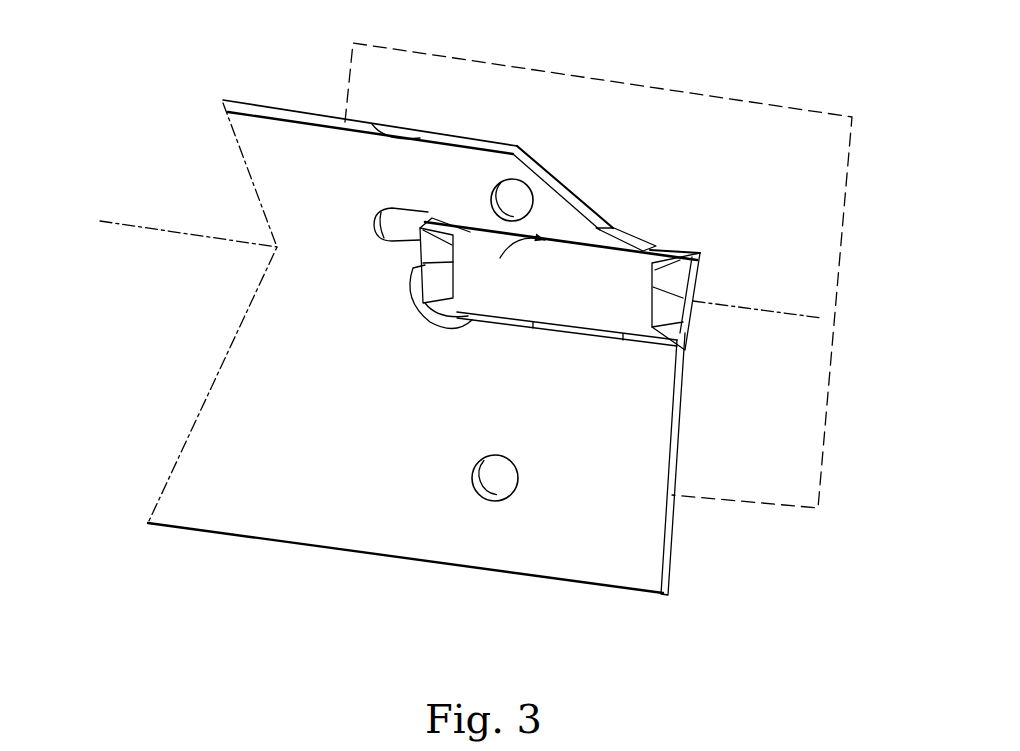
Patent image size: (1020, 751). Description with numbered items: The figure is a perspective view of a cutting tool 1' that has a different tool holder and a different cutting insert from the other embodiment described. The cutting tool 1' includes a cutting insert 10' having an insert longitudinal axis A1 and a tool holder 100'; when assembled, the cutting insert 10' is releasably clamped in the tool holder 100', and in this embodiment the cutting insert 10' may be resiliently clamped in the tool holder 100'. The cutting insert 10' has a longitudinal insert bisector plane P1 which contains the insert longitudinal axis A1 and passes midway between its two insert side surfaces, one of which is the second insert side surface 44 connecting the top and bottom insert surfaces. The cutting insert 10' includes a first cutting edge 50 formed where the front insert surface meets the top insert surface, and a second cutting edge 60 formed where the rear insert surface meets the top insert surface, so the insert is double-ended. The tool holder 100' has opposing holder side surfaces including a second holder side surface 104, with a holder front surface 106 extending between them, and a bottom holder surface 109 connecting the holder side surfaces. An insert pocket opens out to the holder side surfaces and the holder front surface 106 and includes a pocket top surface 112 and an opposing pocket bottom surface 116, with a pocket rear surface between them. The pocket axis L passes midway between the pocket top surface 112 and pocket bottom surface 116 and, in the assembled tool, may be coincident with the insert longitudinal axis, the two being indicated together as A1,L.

The cutting tool 1' is at (386, 364).
The tool holder 100' is at (177, 35).
The cutting insert 10' is at (714, 117).
The pocket top surface 112 is at (490, 232).
The longitudinal insert bisector plane P1 is at (467, 97).
The second cutting edge 60 is at (428, 216).
The insert longitudinal axis and pocket axis A1,L is at (117, 223).
The first cutting edge 50 is at (702, 257).
The pocket bottom surface 116 is at (532, 312).
The bottom holder surface 109 is at (465, 568).
The second insert side surface 44 is at (608, 285).
The holder front surface 106 is at (673, 521).
The second holder side surface 104 is at (592, 543).